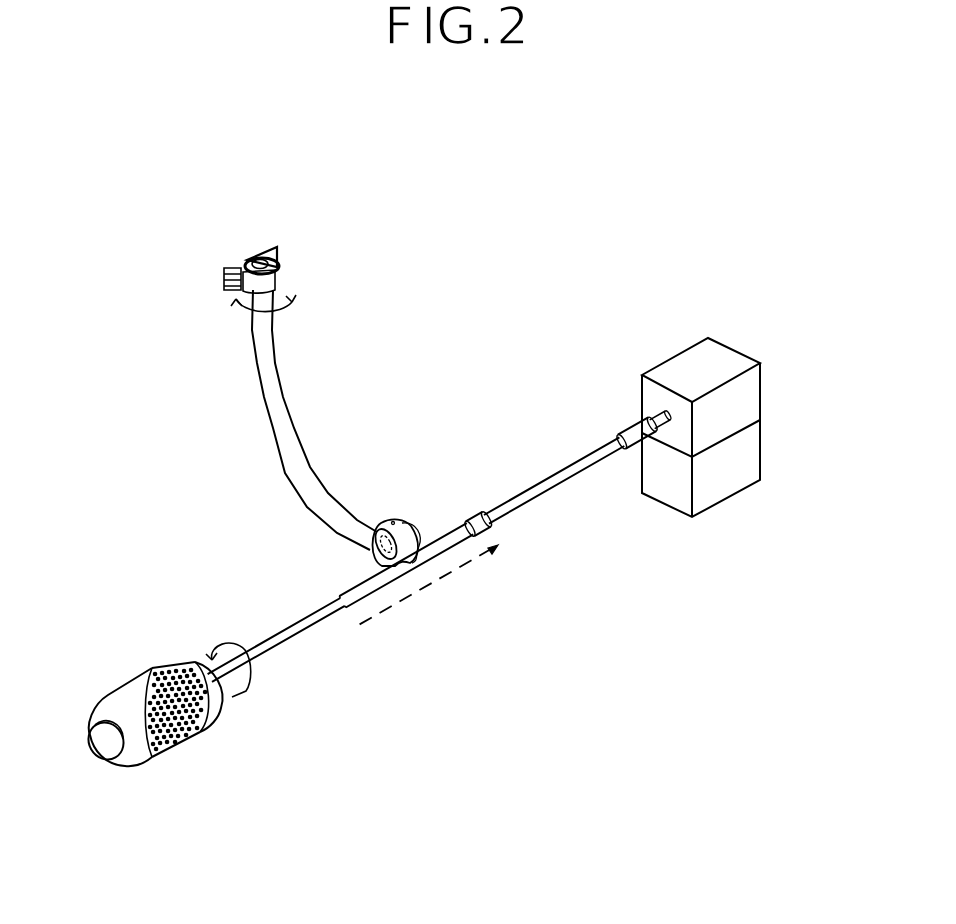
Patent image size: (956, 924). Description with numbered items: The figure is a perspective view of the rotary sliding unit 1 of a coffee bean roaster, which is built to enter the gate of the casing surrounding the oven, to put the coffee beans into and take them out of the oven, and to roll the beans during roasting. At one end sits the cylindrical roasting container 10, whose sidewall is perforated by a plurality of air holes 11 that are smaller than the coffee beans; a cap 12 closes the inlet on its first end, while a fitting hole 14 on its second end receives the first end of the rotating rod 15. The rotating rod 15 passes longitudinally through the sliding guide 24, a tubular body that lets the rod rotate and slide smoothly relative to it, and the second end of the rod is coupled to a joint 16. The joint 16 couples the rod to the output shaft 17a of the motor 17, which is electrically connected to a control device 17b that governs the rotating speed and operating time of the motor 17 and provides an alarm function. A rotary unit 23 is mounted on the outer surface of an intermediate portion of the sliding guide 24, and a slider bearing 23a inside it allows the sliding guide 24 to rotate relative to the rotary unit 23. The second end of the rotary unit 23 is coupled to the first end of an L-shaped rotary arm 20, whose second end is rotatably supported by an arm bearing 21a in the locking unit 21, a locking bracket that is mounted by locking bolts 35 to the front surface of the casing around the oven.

The rotary sliding unit 1 is at (440, 401).
The roasting container 10 is at (100, 700).
The air holes 11 is at (150, 670).
The cap 12 is at (103, 757).
The fitting hole 14 is at (222, 697).
The rotating rod 15 is at (307, 627).
The joint 16 is at (619, 437).
The motor 17 is at (747, 393).
The output shaft 17a is at (651, 412).
The control device 17b is at (762, 462).
The L-shaped rotary arm 20 is at (308, 457).
The locking unit 21 is at (245, 262).
The arm bearing 21a is at (277, 262).
The rotary unit 23 is at (418, 540).
The slider bearing 23a is at (393, 522).
The sliding guide 24 is at (467, 530).
The locking bolts 35 is at (230, 292).